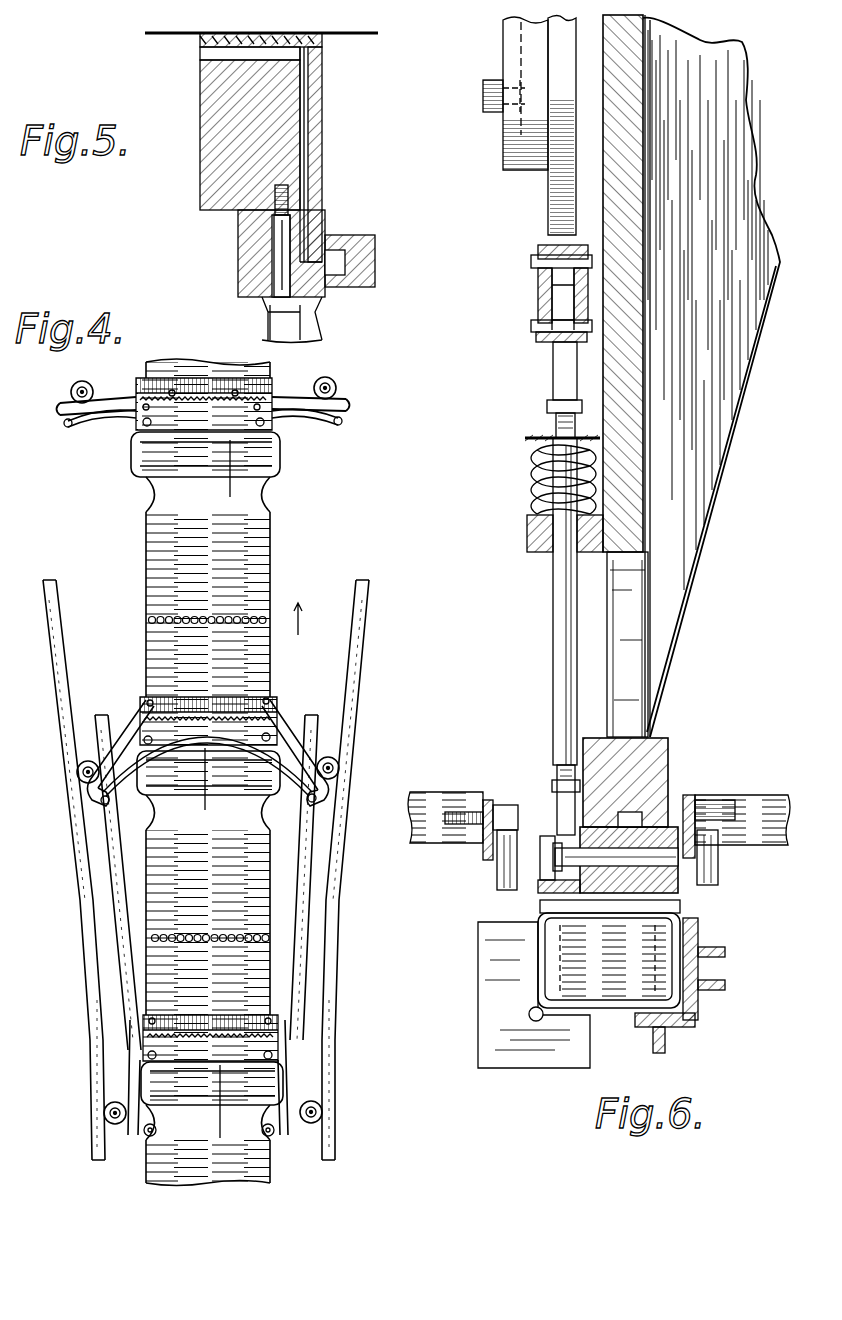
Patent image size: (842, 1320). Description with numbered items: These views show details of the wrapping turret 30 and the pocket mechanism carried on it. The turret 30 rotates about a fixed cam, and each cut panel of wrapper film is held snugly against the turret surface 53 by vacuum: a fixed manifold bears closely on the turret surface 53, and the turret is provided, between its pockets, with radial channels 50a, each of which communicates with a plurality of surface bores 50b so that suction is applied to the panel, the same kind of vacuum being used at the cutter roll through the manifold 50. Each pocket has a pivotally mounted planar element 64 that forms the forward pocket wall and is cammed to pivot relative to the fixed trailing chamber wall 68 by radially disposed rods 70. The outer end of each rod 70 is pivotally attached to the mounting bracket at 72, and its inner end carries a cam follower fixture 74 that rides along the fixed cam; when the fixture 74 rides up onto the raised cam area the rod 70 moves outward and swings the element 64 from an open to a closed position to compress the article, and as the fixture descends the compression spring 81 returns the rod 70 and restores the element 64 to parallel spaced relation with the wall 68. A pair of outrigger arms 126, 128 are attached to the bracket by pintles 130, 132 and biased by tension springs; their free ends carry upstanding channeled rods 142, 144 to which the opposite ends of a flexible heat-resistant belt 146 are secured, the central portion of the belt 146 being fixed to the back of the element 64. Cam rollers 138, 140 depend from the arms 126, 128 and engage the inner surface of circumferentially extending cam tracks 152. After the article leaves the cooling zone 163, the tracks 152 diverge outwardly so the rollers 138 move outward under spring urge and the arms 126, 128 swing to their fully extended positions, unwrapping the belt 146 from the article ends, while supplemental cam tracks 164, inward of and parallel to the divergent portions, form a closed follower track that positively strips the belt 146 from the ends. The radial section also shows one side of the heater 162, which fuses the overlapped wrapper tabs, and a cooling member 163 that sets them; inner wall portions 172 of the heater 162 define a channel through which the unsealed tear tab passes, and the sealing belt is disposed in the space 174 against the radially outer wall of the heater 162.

In FIG. 5, the turret 30 is at (200, 77).
In FIG. 4, the turret 30 is at (270, 550).
In FIG. 6, the turret 30 is at (672, 773).
In FIG. 5, the manifold 50 is at (340, 250).
In FIG. 5, the radial channels 50a is at (315, 135).
In FIG. 5, the surface bores 50b is at (272, 33).
In FIG. 4, the surface bores 50b is at (265, 615).
In FIG. 5, the turret surface 53 is at (300, 220).
In FIG. 4, the planar element 64 is at (207, 801).
In FIG. 4, the trailing chamber wall 68 is at (190, 483).
In FIG. 6, the rods 70 is at (553, 642).
In FIG. 6, the pivotal attachment 72 is at (565, 896).
In FIG. 6, the cam follower fixtures 74 is at (538, 300).
In FIG. 6, the compression spring 81 is at (540, 478).
In FIG. 4, the outrigger arm 126 is at (136, 398).
In FIG. 4, the outrigger arm 128 is at (272, 398).
In FIG. 4, the pintle 130 is at (177, 768).
In FIG. 4, the pintle 132 is at (282, 427).
In FIG. 4, the cam roller 138 is at (71, 392).
In FIG. 4, the cam roller 140 is at (336, 389).
In FIG. 4, the channeled rod 142 is at (148, 1136).
In FIG. 4, the channeled rod 144 is at (272, 1136).
In FIG. 4, the flexible belt 146 is at (108, 417).
In FIG. 4, the cam track 152 is at (80, 898).
In FIG. 6, the heater 162 is at (700, 940).
In FIG. 6, the cooling zone 163 is at (480, 1000).
In FIG. 4, the supplemental cam track 164 is at (308, 840).
In FIG. 6, the inner wall portion 172 is at (640, 1027).
In FIG. 6, the space 174 is at (680, 1030).